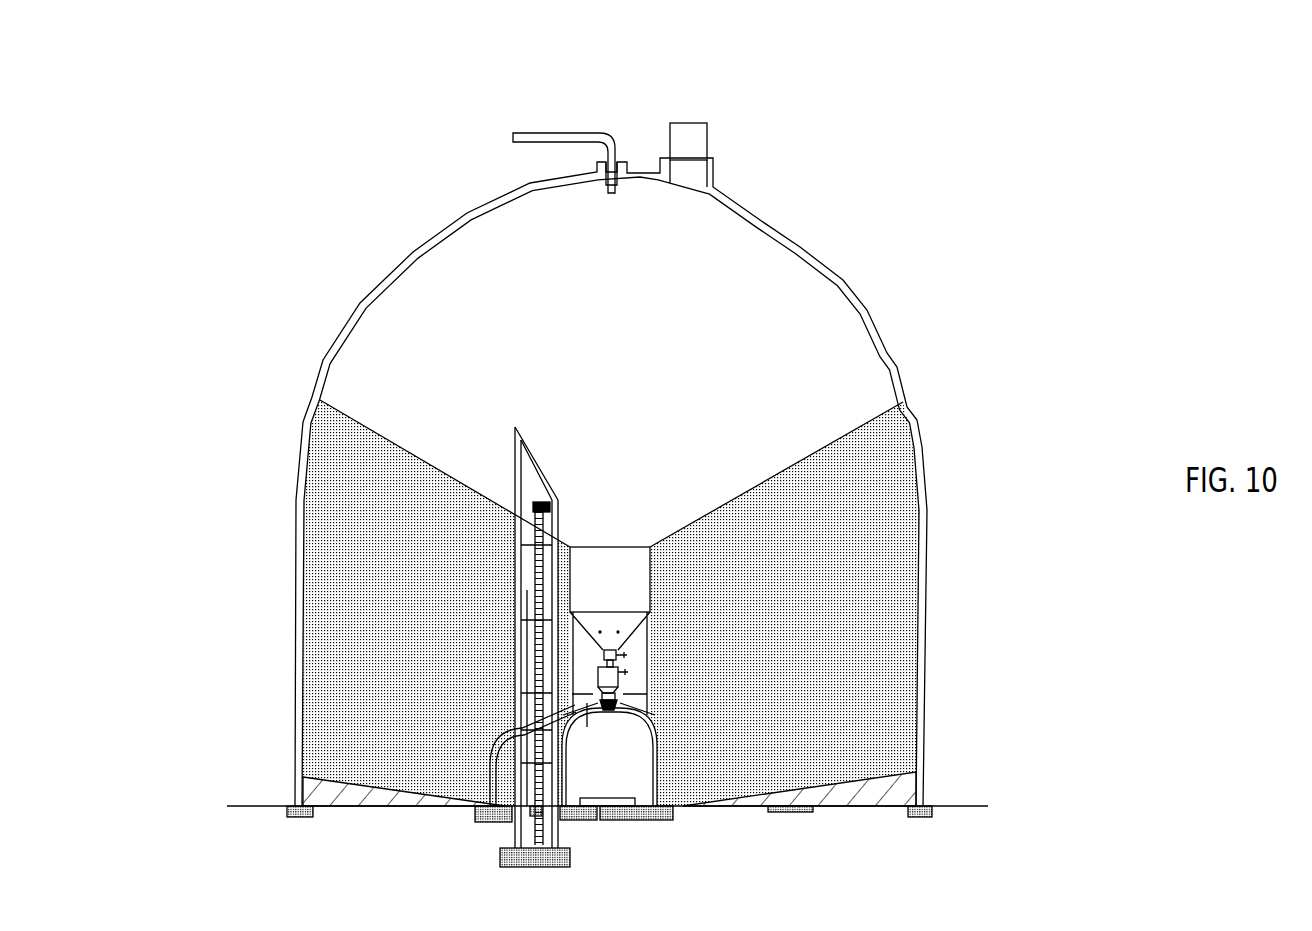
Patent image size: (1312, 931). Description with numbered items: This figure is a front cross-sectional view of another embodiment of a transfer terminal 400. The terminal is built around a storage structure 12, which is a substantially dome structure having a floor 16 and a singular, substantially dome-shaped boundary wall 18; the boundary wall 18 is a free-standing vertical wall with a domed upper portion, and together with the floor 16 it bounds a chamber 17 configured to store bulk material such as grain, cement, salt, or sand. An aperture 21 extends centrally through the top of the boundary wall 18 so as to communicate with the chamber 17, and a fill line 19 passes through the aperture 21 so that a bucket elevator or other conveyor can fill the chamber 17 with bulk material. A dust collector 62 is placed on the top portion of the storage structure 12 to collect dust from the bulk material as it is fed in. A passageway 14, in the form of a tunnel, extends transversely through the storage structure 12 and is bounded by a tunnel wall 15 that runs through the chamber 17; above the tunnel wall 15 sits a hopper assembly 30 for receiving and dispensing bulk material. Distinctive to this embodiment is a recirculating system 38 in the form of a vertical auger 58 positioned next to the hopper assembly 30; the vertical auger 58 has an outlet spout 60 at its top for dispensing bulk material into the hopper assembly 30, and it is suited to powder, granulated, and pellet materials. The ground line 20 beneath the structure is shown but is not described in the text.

The transfer terminal 400 is at (812, 148).
The storage structure 12 is at (847, 277).
The passageway 14 is at (605, 776).
The tunnel wall 15 is at (660, 737).
The floor 16 is at (303, 787).
The chamber 17 is at (847, 323).
The boundary wall 18 is at (800, 240).
The fill line 19 is at (577, 133).
The ground 20 is at (243, 805).
The aperture 21 is at (620, 186).
The hopper assembly 30 is at (616, 528).
The recirculating system 38 is at (569, 484).
The vertical auger 58 is at (540, 467).
The outlet spout 60 is at (571, 530).
The dust collector 62 is at (700, 140).